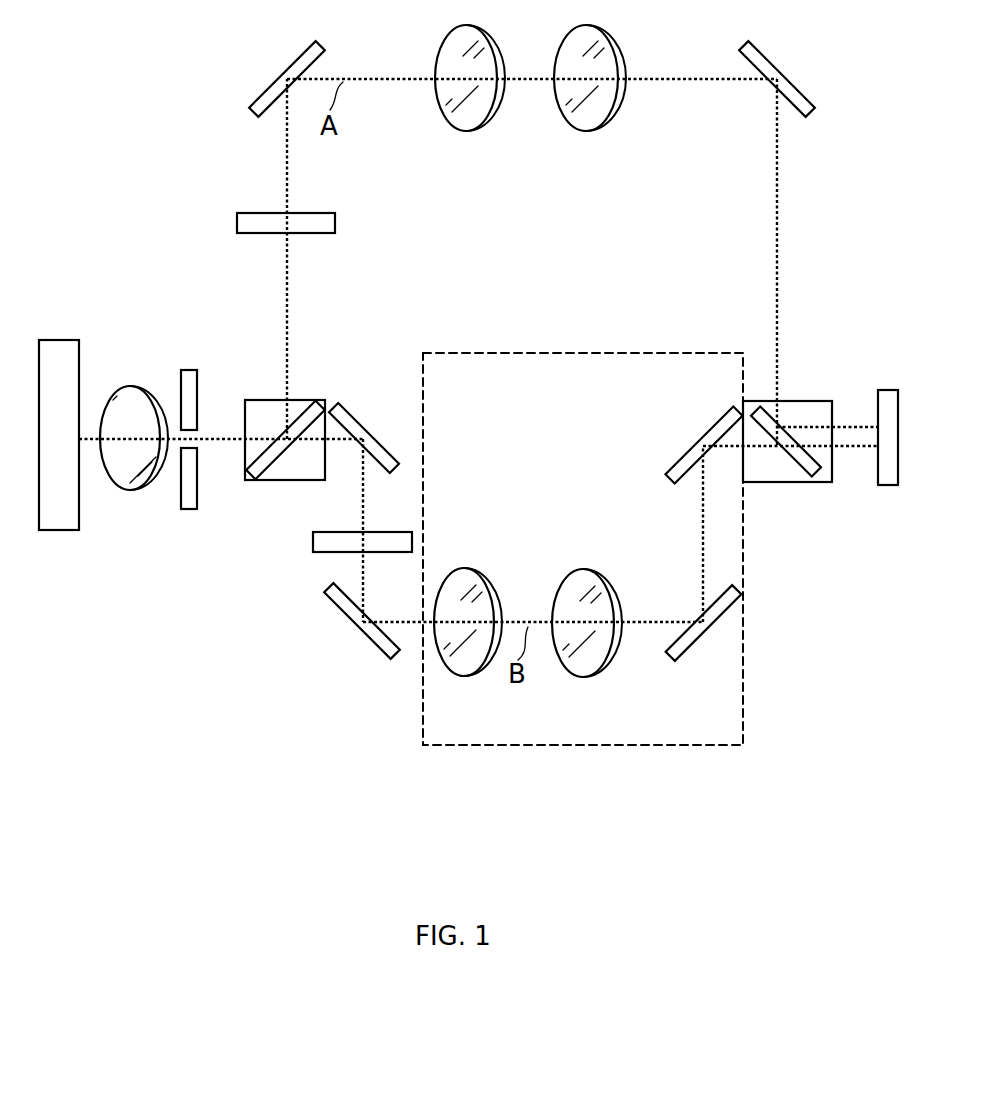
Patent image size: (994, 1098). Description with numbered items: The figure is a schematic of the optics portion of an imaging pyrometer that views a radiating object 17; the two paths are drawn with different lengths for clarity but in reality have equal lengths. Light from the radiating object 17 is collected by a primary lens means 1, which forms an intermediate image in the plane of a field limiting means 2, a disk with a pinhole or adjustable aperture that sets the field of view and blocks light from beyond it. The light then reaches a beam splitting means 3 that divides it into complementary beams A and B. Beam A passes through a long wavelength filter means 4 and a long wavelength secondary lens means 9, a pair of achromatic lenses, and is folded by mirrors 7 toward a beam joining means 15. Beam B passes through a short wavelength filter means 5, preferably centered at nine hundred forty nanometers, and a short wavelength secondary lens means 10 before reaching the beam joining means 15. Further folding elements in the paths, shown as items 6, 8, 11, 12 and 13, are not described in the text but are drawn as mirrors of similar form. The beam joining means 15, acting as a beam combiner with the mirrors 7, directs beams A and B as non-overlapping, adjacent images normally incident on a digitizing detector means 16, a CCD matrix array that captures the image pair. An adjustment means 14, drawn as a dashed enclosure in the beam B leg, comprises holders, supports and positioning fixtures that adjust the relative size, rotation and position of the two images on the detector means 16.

The primary lens means 1 is at (113, 388).
The field limiting means 2 is at (188, 370).
The beam splitting means 3 is at (262, 400).
The long wavelength filter means 4 is at (237, 222).
The short wavelength filter means 5 is at (312, 550).
The mirror 6 is at (380, 442).
The mirrors 7 is at (280, 73).
The mirror 8 is at (368, 645).
The long wavelength secondary lens means 9 is at (468, 133).
The short wavelength secondary lens means 10 is at (458, 572).
The mirror 11 is at (778, 73).
The mirror 12 is at (745, 597).
The mirror 13 is at (690, 443).
The adjustment means 14 is at (745, 720).
The beam joining means 15 is at (790, 401).
The digitizing detector means 16 is at (886, 490).
The radiating object 17 is at (50, 340).